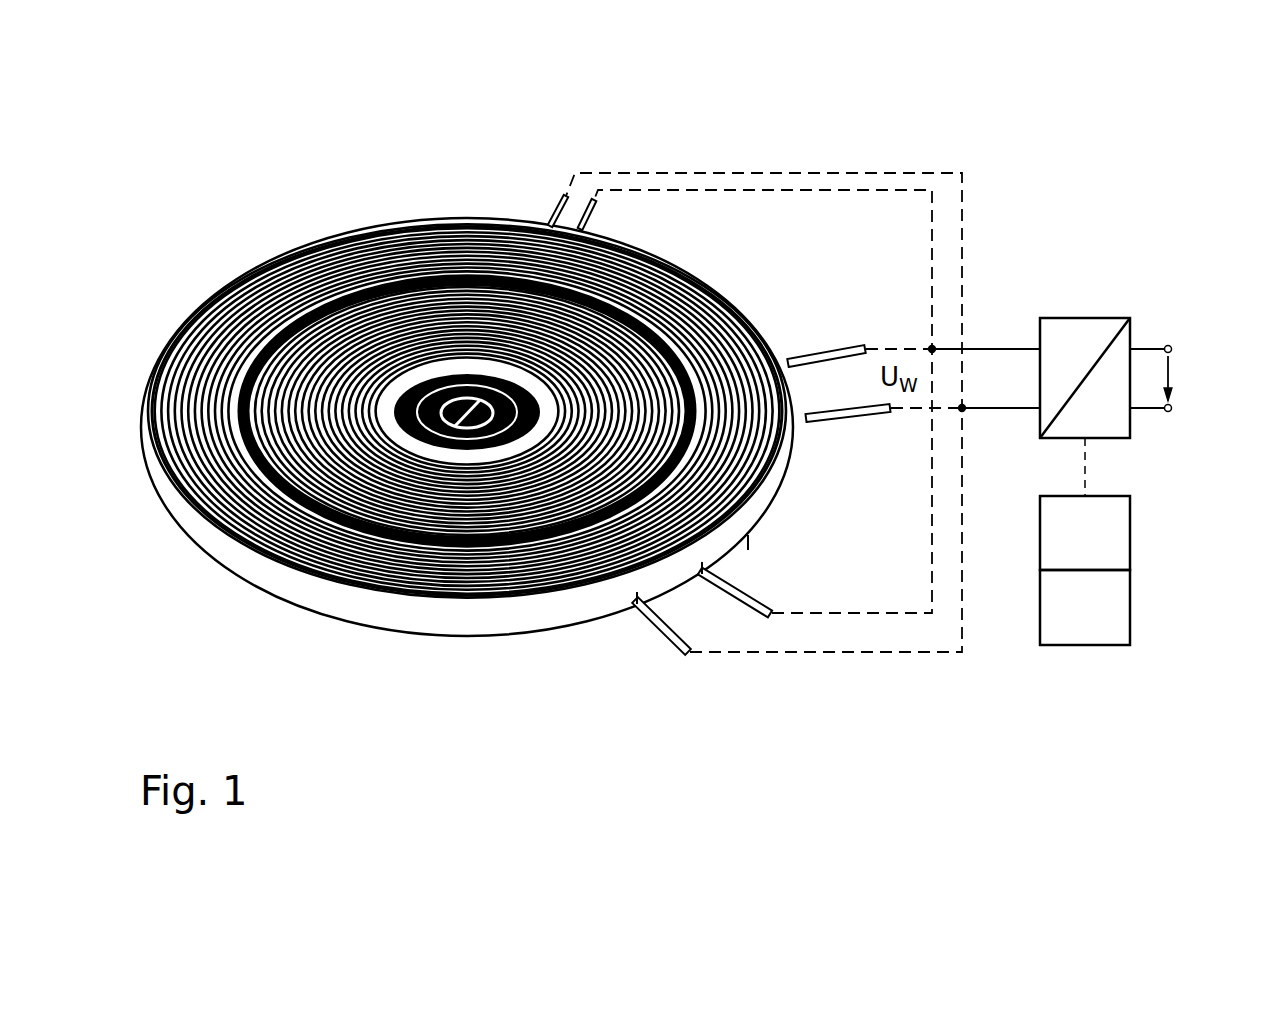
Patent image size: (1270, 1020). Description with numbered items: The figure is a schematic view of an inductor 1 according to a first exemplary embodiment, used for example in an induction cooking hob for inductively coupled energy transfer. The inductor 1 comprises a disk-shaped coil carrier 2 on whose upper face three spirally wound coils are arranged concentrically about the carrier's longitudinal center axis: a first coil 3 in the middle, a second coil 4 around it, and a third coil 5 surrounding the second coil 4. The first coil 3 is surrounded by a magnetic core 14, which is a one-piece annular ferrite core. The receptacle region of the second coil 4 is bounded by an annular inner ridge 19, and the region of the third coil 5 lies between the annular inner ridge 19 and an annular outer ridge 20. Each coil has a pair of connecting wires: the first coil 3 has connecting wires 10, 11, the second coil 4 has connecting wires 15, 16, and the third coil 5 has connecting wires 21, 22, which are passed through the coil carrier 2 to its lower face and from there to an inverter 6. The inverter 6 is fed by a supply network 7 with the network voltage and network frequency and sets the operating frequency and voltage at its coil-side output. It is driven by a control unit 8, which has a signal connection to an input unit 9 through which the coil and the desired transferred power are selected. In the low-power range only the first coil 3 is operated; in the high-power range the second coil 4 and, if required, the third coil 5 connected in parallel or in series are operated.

The inductor 1 is at (467, 391).
The coil carrier 2 is at (476, 642).
The first coil 3 is at (428, 388).
The second coil 4 is at (341, 316).
The third coil 5 is at (290, 297).
The inverter 6 is at (1130, 330).
The supply network 7 is at (1160, 345).
The control unit 8 is at (1123, 534).
The input unit 9 is at (1123, 605).
The connecting wire 10 is at (558, 207).
The connecting wire 11 is at (596, 211).
The magnetic core 14 is at (440, 456).
The connecting wire 15 is at (818, 355).
The connecting wire 16 is at (833, 410).
The annular inner ridge 19 is at (288, 485).
The annular outer ridge 20 is at (337, 612).
The connecting wire 21 is at (744, 600).
The connecting wire 22 is at (655, 618).